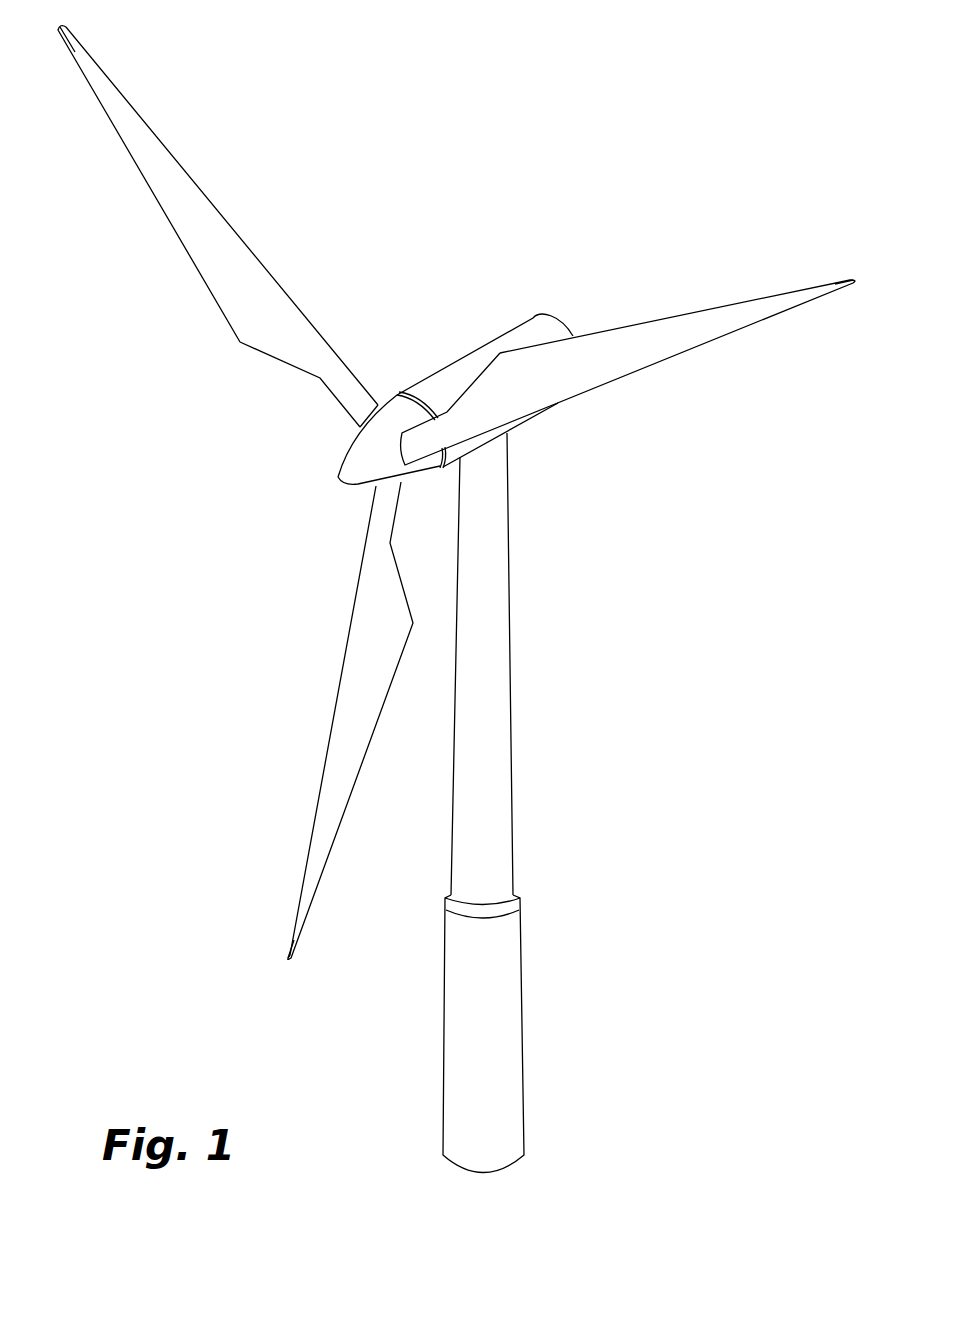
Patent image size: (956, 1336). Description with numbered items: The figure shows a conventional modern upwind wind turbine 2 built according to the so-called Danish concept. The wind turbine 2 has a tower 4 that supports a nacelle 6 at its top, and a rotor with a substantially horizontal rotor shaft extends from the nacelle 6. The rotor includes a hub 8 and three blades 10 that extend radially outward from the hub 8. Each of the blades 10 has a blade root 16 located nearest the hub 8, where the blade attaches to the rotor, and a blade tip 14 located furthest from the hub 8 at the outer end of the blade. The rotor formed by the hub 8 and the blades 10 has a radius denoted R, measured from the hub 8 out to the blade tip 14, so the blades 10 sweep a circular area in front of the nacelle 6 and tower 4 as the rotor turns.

The wind turbine 2 is at (456, 599).
The tower 4 is at (500, 665).
The nacelle 6 is at (450, 378).
The hub 8 is at (360, 460).
The blades 10 is at (252, 315).
The blade tip 14 is at (100, 82).
The blade root 16 is at (353, 427).